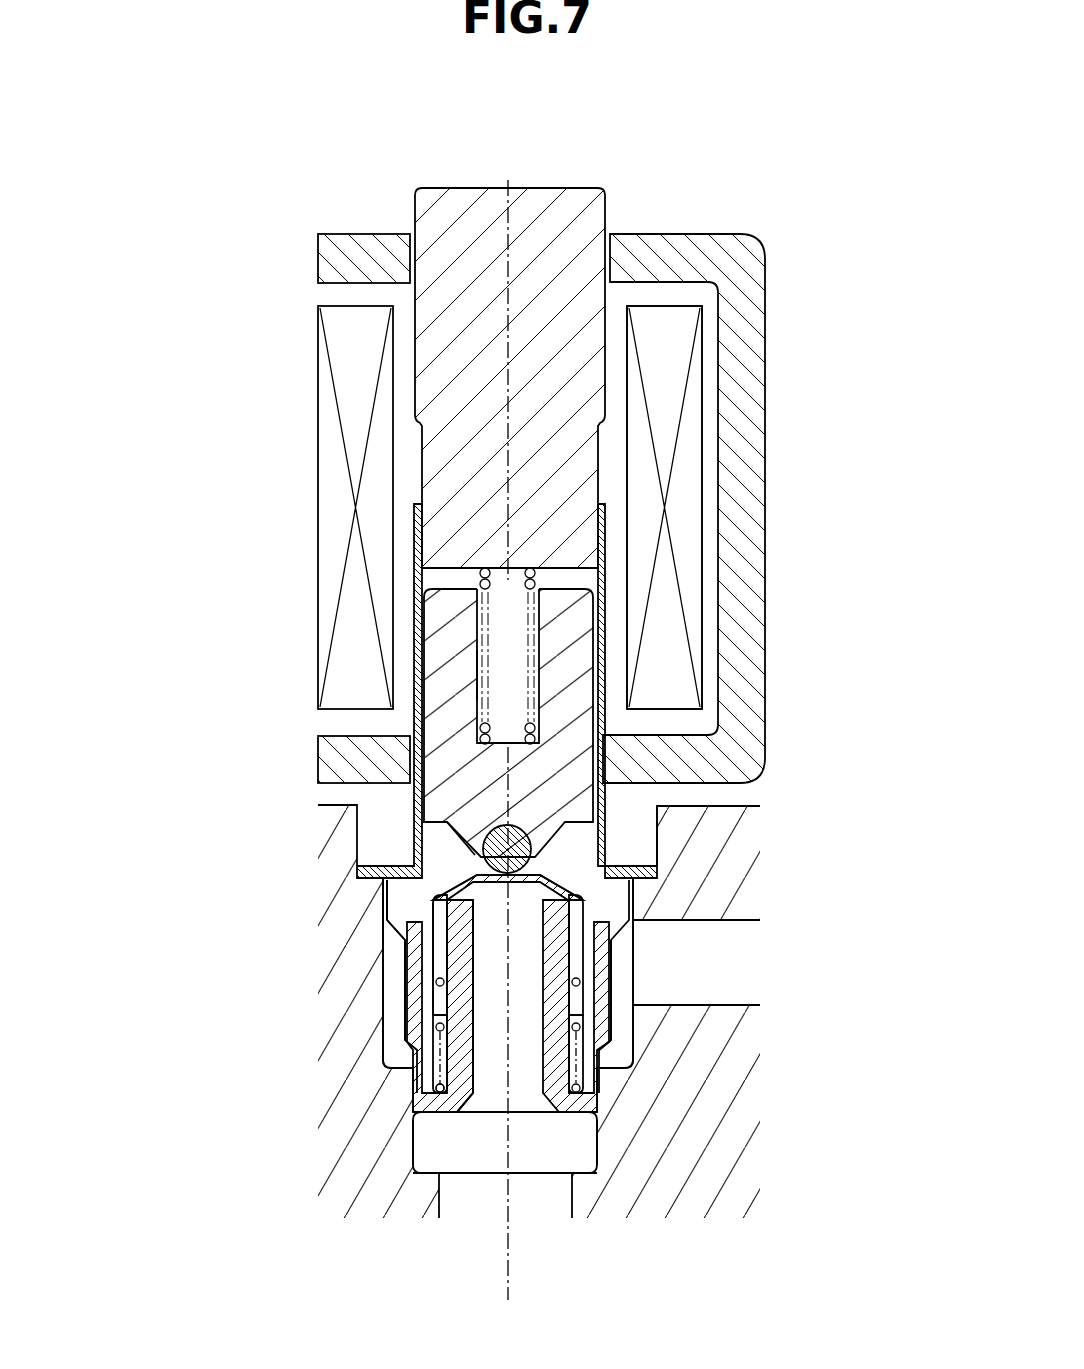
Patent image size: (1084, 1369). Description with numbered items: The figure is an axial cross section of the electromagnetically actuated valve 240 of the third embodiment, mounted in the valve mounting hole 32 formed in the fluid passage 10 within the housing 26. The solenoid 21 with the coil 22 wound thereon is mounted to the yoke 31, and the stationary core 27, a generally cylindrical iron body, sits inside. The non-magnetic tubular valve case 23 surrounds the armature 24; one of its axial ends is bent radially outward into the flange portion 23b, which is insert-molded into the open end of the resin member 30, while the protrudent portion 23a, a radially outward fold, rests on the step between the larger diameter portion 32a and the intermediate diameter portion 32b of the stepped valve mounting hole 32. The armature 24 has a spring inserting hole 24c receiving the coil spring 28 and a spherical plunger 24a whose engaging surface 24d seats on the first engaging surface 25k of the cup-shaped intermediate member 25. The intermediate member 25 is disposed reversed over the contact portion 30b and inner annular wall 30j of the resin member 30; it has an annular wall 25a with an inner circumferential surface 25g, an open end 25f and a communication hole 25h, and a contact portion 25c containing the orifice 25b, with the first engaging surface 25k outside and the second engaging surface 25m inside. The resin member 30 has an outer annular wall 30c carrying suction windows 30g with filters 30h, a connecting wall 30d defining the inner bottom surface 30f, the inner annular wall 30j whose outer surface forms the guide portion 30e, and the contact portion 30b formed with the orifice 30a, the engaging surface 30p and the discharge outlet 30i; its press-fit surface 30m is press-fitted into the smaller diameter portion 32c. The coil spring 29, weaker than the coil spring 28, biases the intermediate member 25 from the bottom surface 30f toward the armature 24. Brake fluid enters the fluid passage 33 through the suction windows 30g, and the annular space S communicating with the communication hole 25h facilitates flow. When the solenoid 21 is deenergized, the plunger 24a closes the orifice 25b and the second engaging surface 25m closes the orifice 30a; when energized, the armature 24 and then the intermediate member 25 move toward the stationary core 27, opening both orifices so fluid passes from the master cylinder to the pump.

The electromagnetically actuated valve 240 is at (743, 200).
The fluid passage 10 is at (742, 918).
The solenoid 21 is at (668, 306).
The coil 22 is at (676, 380).
The valve case 23 is at (605, 552).
The protrudent portion 23a is at (418, 876).
The flange portion 23b is at (600, 912).
The armature 24 is at (596, 660).
The plunger 24a is at (488, 800).
The spring inserting hole 24c is at (470, 703).
The engaging surface 24d is at (455, 832).
The intermediate member 25 is at (588, 885).
The annular wall 25a is at (600, 1003).
The orifice 25b is at (447, 925).
The contact portion 25c is at (445, 872).
The open end 25f is at (590, 1033).
The inner circumferential surface 25g is at (428, 957).
The communication hole 25h is at (442, 915).
The first engaging surface 25k is at (585, 890).
The second engaging surface 25m is at (590, 900).
The housing 26 is at (708, 1136).
The stationary core 27 is at (583, 188).
The coil spring 28 is at (480, 648).
The coil spring 29 is at (415, 1082).
The resin member 30 is at (600, 1090).
The orifice 30a is at (640, 921).
The contact portion 30b is at (397, 893).
The outer annular wall 30c is at (385, 1045).
The connecting wall 30d is at (420, 1180).
The guide portion 30e is at (474, 980).
The inner bottom surface 30f is at (505, 1175).
The suction window 30g is at (410, 1022).
The filter 30h is at (618, 970).
The discharge outlet 30i is at (478, 1178).
The inner annular wall 30j is at (458, 1058).
The press-fit surface 30m is at (590, 1185).
The engaging surface 30p is at (400, 870).
The yoke 31 is at (737, 263).
The valve mounting hole 32 is at (522, 840).
The larger diameter portion 32a is at (630, 833).
The intermediate diameter portion 32b is at (614, 1058).
The smaller diameter portion 32c is at (596, 1168).
The fluid passage 33 is at (436, 1000).
The annular space S is at (625, 905).